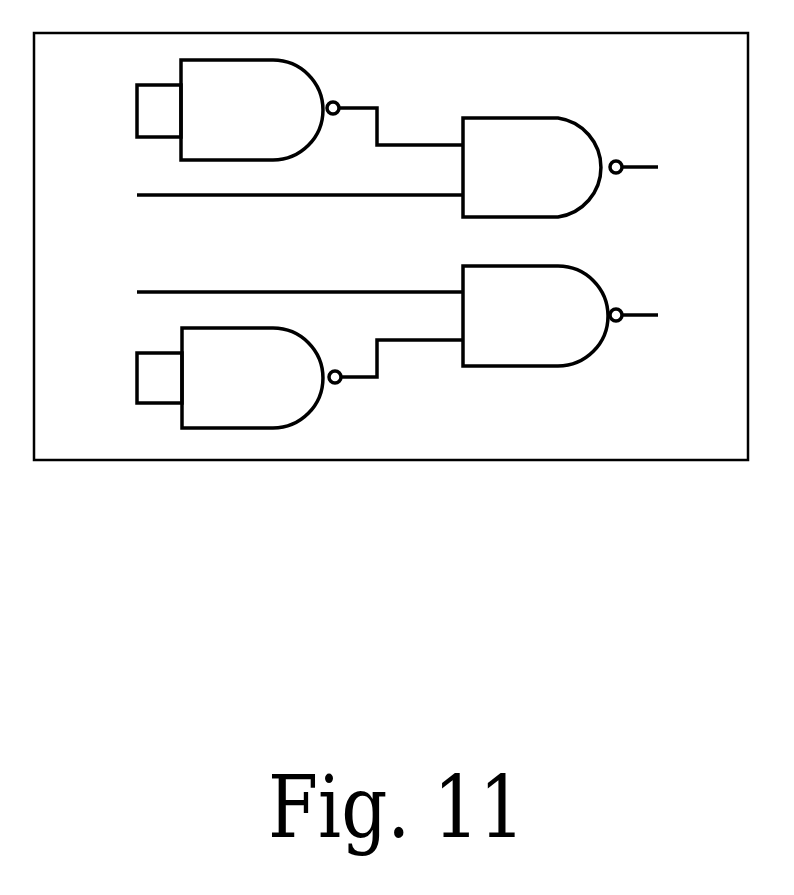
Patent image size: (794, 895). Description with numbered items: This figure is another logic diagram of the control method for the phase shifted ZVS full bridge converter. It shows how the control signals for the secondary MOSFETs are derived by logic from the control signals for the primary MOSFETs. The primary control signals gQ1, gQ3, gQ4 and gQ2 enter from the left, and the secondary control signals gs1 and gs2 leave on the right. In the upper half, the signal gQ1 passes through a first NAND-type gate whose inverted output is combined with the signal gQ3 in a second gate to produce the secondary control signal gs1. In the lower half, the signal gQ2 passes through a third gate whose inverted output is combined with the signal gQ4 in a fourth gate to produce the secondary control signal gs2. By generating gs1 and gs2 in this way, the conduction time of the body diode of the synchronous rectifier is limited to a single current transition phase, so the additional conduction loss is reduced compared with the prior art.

The control signal for primary MOSFET Q1 gQ1 is at (204, 110).
The control signal for primary MOSFET Q3 gQ3 is at (266, 188).
The control signal for primary MOSFET Q4 gQ4 is at (266, 287).
The control signal for primary MOSFET Q2 gQ2 is at (205, 378).
The control signal for secondary MOSFET S1 gs1 is at (595, 167).
The control signal for secondary MOSFET S2 gs2 is at (595, 316).